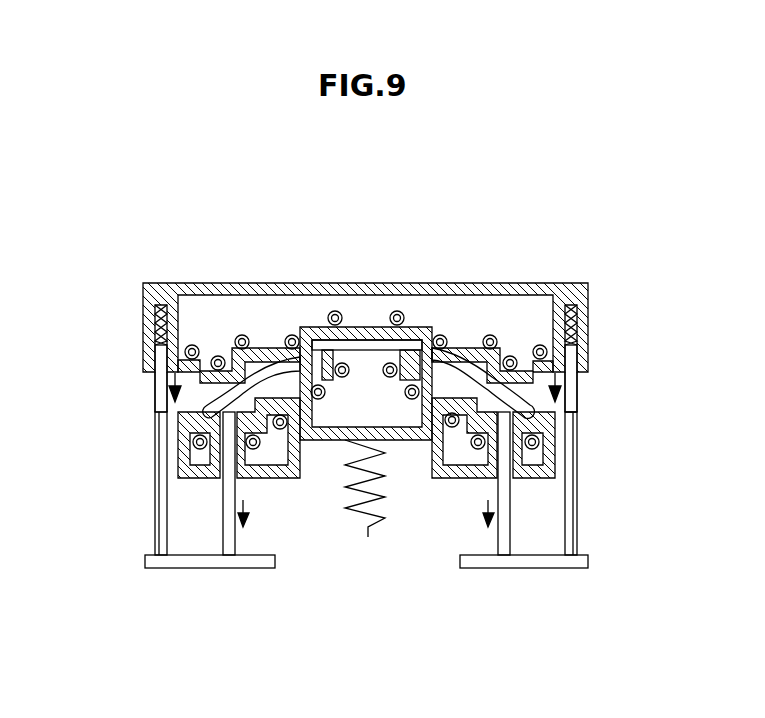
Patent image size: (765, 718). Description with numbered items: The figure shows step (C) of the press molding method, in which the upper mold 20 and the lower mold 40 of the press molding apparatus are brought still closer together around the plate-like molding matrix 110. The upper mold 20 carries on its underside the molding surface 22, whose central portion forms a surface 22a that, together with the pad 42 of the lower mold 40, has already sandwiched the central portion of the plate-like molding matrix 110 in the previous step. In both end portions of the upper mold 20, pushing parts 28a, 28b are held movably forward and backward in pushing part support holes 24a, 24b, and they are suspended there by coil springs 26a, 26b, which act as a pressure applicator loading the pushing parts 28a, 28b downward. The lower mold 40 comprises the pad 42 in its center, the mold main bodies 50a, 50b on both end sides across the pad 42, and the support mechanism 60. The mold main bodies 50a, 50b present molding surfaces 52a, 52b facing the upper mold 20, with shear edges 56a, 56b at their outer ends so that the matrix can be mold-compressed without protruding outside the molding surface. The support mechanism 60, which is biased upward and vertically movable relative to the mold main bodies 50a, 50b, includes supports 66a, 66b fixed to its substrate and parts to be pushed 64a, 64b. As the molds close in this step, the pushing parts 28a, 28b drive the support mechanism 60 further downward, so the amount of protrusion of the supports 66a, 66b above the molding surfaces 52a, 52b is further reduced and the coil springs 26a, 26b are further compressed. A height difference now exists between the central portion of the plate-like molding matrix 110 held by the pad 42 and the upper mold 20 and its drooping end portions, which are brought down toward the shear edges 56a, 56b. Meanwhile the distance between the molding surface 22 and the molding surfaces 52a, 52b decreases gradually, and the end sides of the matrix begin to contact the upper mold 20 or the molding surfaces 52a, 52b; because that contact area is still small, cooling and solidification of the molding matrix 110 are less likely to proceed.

The upper mold 20 is at (606, 333).
The molding surface 22 is at (276, 352).
The surface of the central portion of the upper mold 22a is at (408, 343).
The plate-like molding matrix 110 is at (352, 340).
The pushing part support hole 24a is at (160, 346).
The pushing part support hole 24b is at (580, 346).
The coil spring 26a is at (153, 312).
The coil spring 26b is at (588, 312).
The pushing part 28a is at (166, 387).
The pushing part 28b is at (575, 388).
The lower mold 40 is at (596, 437).
The pad 42 is at (402, 445).
The mold main body 50a is at (300, 470).
The mold main body 50b is at (440, 478).
The molding surface 52a is at (258, 450).
The molding surface 52b is at (470, 448).
The shear edge 56a is at (205, 452).
The shear edge 56b is at (530, 452).
The support mechanism 60 is at (142, 555).
The part to be pushed 64a is at (158, 468).
The part to be pushed 64b is at (575, 468).
The support 66a is at (228, 522).
The support 66b is at (505, 527).